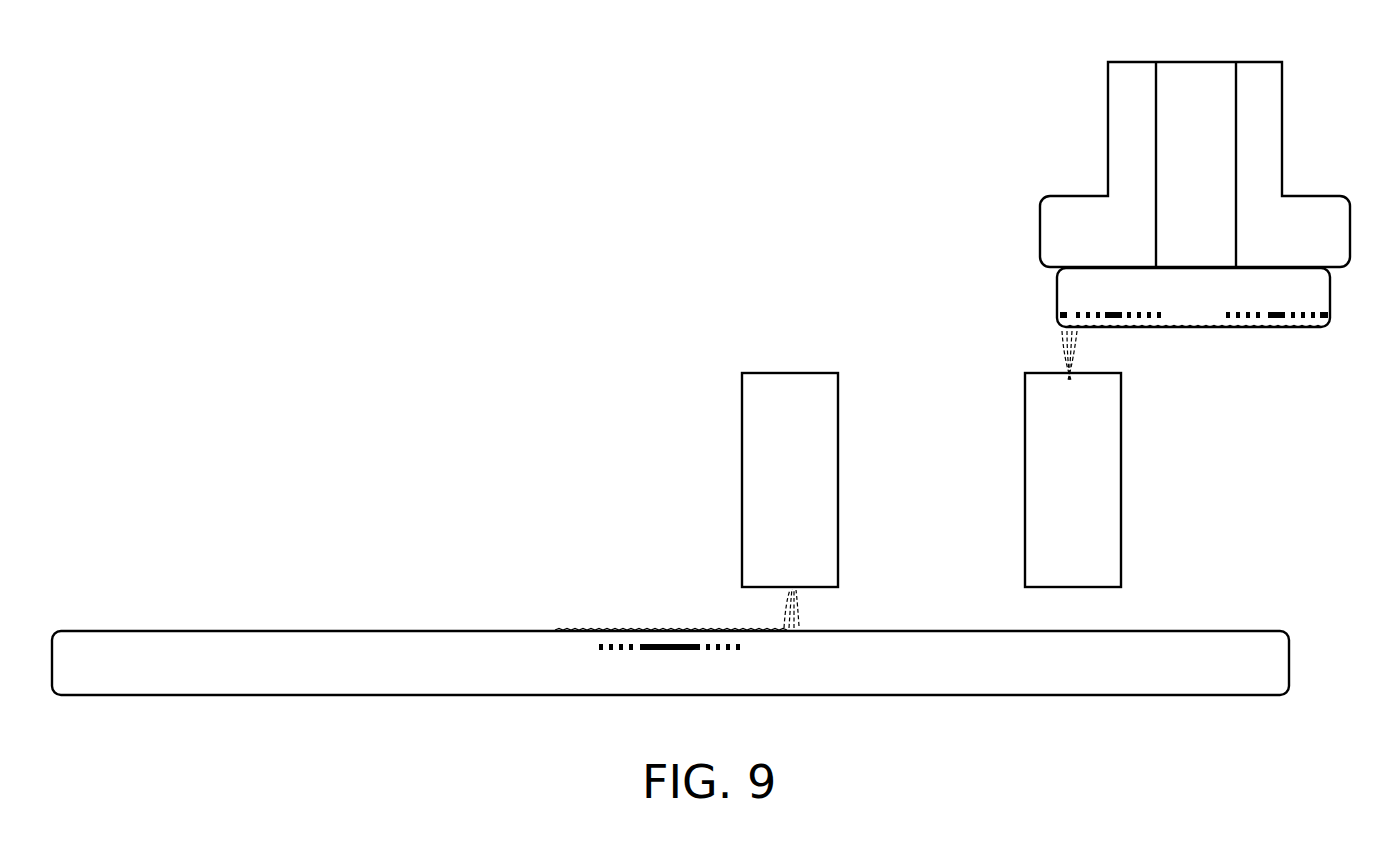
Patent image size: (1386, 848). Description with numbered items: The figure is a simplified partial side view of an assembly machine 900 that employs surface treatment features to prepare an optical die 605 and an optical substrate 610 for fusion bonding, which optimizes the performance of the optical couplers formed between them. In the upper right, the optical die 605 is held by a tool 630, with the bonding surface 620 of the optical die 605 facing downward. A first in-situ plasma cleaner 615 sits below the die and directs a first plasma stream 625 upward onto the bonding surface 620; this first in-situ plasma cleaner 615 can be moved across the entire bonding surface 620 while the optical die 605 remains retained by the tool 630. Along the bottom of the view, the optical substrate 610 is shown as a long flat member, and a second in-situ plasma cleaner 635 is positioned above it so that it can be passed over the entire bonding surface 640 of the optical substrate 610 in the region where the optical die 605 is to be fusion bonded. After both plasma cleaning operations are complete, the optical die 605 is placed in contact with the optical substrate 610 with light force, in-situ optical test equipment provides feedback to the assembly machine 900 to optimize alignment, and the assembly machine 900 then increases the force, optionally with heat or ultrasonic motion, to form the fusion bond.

The assembly machine 900 is at (690, 340).
The optical die 605 is at (1062, 287).
The optical substrate 610 is at (1210, 647).
The first in-situ plasma cleaner 615 is at (1112, 455).
The bonding surface 620 is at (1208, 330).
The first plasma stream 625 is at (1063, 348).
The tool 630 is at (1117, 117).
The second in-situ plasma cleaner 635 is at (825, 457).
The bonding surface 640 is at (595, 630).